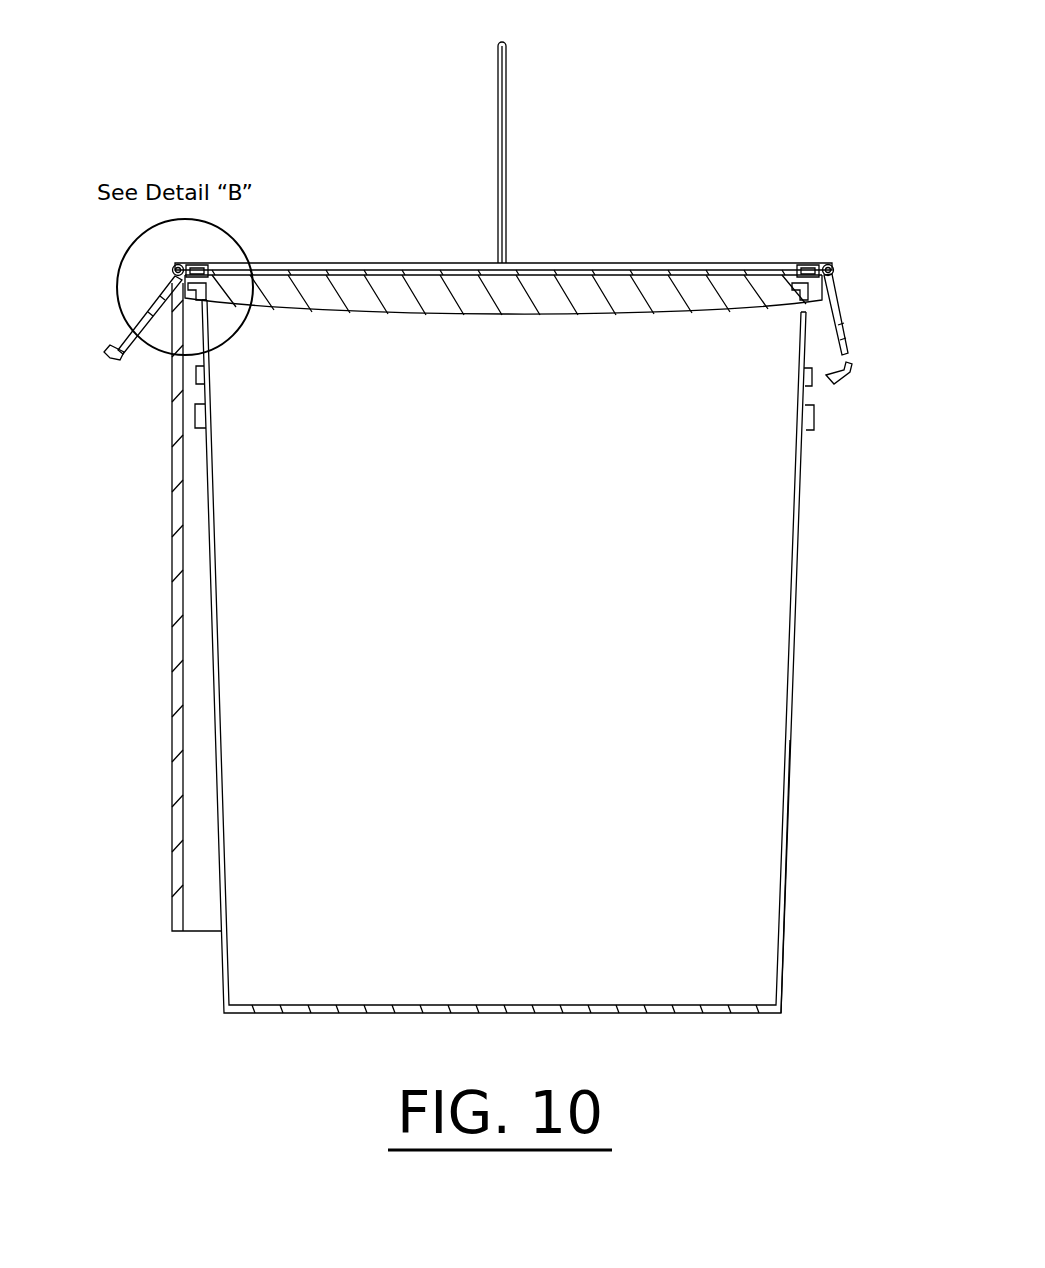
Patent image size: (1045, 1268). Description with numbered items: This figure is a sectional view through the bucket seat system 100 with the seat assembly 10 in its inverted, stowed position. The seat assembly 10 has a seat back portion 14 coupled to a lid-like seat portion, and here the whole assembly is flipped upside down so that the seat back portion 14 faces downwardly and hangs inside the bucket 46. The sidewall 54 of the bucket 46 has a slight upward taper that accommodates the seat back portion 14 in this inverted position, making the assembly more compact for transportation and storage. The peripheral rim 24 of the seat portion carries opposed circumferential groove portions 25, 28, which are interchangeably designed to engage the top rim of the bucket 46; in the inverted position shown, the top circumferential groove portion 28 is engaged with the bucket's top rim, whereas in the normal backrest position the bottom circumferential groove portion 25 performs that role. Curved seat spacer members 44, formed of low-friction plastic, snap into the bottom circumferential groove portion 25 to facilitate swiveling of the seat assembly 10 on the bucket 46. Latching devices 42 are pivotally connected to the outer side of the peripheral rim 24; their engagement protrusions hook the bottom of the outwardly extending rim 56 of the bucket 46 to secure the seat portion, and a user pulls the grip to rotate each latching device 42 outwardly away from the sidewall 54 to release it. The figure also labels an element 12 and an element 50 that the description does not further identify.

The bucket seat system 100 is at (213, 1040).
The seat assembly 10 is at (140, 521).
The handle rod 50 is at (506, 118).
The lid 12 is at (630, 290).
The bottom circumferential groove portion 25 is at (205, 268).
The curved seat spacer member 44 is at (795, 262).
The peripheral rim 24 is at (822, 290).
The latching device 42 is at (135, 340).
The top circumferential groove portion 28 is at (196, 298).
The seat back portion 14 is at (172, 625).
The bucket 46 is at (735, 537).
The outwardly extending rim 56 is at (806, 386).
The sidewall 54 is at (780, 870).